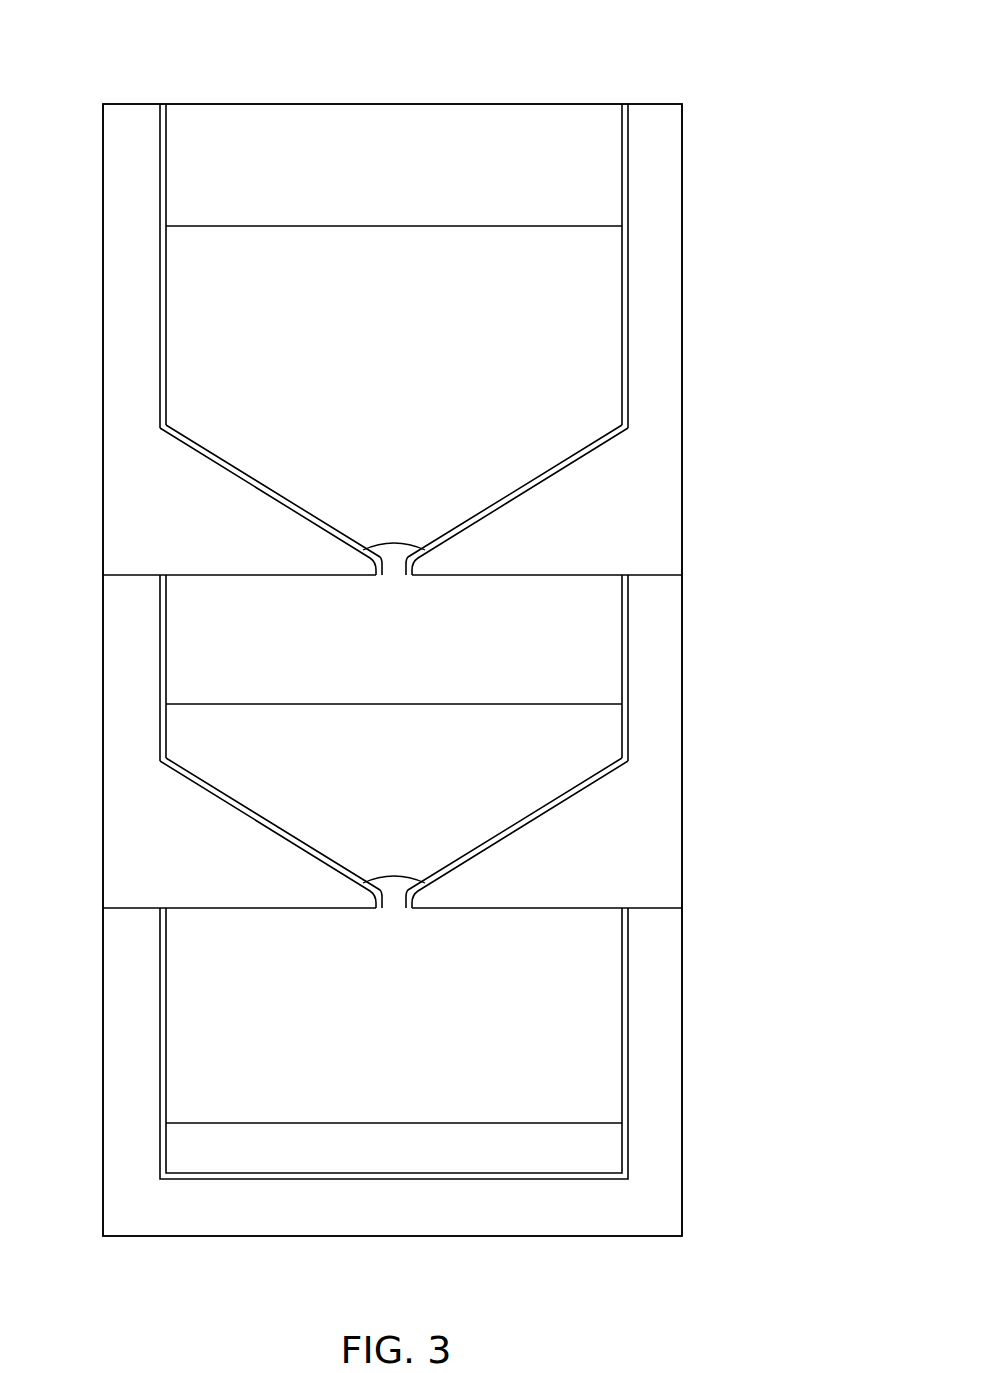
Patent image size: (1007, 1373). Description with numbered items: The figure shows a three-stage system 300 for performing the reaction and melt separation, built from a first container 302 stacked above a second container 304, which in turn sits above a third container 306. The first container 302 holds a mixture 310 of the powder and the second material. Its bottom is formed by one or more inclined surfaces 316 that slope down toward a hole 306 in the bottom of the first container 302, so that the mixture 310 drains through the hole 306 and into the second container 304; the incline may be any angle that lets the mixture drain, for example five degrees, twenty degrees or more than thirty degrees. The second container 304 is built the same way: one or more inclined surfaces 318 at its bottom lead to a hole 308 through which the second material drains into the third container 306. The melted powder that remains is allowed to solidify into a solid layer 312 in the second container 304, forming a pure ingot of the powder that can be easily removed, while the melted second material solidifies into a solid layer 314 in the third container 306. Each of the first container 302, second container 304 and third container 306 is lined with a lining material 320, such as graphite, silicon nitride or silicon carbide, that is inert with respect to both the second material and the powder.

The three-stage system 300 is at (682, 25).
The first container 302 is at (682, 322).
The second container 304 is at (682, 648).
The third container 306 is at (682, 1040).
The hole 308 is at (390, 903).
The mixture 310 is at (380, 302).
The solid layer 312 is at (377, 819).
The solid layer 314 is at (377, 1161).
The inclined surfaces 316 is at (263, 492).
The inclined surfaces 318 is at (263, 822).
The lining material 320 is at (166, 310).